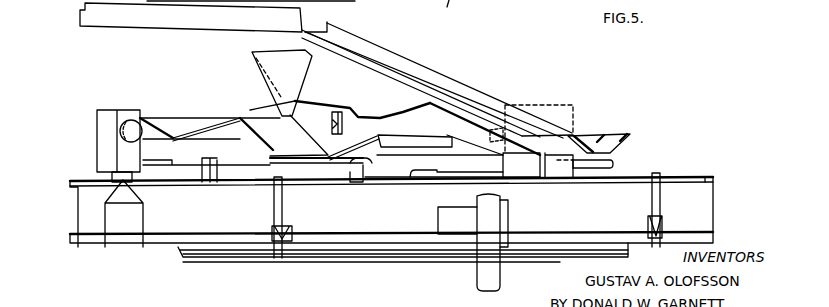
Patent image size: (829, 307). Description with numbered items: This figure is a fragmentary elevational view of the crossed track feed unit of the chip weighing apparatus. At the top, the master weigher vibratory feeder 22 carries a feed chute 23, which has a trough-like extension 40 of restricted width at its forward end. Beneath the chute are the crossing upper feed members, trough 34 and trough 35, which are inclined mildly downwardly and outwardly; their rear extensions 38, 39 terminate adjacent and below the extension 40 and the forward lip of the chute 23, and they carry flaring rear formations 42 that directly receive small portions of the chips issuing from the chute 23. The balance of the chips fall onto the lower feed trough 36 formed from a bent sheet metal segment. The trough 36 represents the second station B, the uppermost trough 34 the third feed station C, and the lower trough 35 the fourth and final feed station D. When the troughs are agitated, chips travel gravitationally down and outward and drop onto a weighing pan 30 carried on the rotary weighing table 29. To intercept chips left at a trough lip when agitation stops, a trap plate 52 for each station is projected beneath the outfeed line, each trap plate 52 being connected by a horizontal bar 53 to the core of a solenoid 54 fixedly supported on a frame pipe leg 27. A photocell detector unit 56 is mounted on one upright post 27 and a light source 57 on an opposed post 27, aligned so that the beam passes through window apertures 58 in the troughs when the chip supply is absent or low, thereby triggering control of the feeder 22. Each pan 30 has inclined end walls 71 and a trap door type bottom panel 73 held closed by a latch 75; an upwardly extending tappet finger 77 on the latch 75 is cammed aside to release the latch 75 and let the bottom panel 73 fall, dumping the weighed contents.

The master weigher vibratory feeder 22 is at (143, 31).
The feed chute 23 is at (237, 20).
The pipe legs 27 is at (467, 288).
The rotary weighing table 29 is at (312, 262).
The weighing pan 30 is at (205, 228).
The feed trough 34 is at (389, 113).
The feed trough 35 is at (434, 77).
The feed trough 36 is at (267, 145).
The rear extension 38 is at (335, 101).
The rear extension 39 is at (360, 43).
The trough-like extension 40 is at (322, 30).
The flaring rear formation 42 is at (258, 75).
The trap plate 52 is at (163, 166).
The horizontal bar 53 is at (366, 163).
The solenoid 54 is at (388, 177).
The photocell detector unit 56 is at (557, 103).
The light source 57 is at (127, 110).
The window aperture 58 is at (347, 116).
The end wall 71 is at (127, 228).
The bottom panel 73 is at (358, 250).
The latch 75 is at (291, 228).
The tappet finger 77 is at (273, 204).
The second station B is at (302, 154).
The third feed station C is at (595, 169).
The fourth feed station D is at (632, 135).